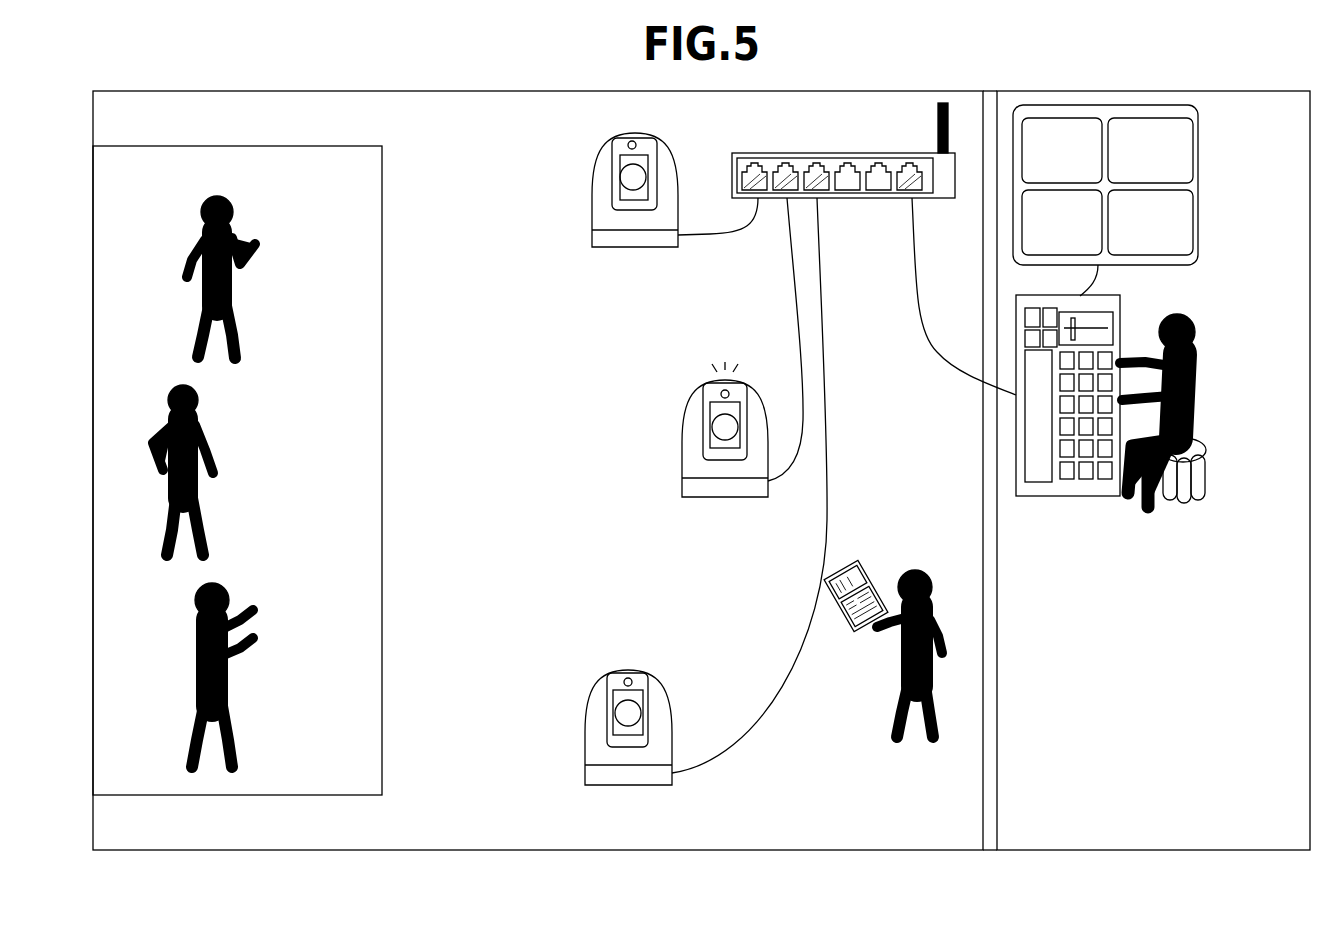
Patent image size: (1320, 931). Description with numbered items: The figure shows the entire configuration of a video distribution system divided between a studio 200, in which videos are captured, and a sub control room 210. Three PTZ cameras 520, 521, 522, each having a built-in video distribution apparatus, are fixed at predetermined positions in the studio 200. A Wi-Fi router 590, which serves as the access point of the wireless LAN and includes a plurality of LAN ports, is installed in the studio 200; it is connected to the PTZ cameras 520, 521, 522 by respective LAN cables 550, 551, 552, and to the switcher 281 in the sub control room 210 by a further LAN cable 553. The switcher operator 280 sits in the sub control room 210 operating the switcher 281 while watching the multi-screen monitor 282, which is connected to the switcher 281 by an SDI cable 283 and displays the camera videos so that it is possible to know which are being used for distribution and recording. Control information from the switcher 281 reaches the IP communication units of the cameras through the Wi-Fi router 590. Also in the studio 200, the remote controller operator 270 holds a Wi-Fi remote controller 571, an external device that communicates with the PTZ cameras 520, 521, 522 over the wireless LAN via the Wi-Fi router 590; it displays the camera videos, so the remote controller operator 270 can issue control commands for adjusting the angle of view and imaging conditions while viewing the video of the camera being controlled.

The studio 200 is at (510, 851).
The sub control room 210 is at (1170, 851).
The PTZ camera 520 is at (592, 178).
The PTZ camera 521 is at (683, 438).
The PTZ camera 522 is at (585, 715).
The LAN cable 550 is at (703, 240).
The LAN cable 551 is at (797, 333).
The LAN cable 552 is at (763, 720).
The LAN cable 553 is at (940, 355).
The Wi-Fi router 590 is at (862, 203).
The Wi-Fi remote controller 571 is at (898, 552).
The remote controller operator 270 is at (892, 722).
The switcher operator 280 is at (1200, 393).
The switcher 281 is at (1063, 497).
The multi-screen monitor 282 is at (1200, 235).
The SDI cable 283 is at (1097, 283).